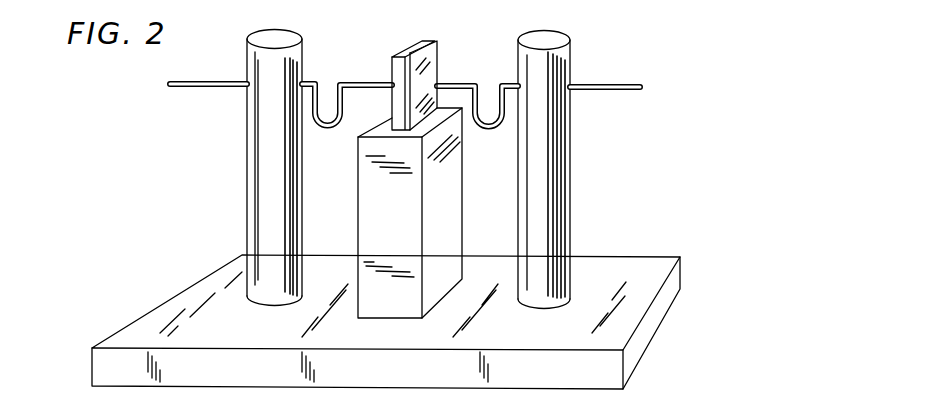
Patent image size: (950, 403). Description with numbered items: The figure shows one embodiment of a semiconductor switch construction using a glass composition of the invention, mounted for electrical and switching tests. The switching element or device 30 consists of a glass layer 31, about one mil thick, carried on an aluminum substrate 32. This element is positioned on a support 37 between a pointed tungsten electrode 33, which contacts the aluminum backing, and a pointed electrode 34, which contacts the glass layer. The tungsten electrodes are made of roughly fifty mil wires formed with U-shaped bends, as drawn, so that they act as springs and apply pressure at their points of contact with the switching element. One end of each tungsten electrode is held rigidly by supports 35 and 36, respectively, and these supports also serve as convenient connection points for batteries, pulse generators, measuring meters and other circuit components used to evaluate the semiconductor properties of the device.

The switching element 30 is at (422, 70).
The layer of glass 31 is at (432, 58).
The aluminum substrate 32 is at (403, 53).
The pointed tungsten electrode 33 is at (369, 83).
The pointed electrode 34 is at (458, 85).
The support 35 is at (265, 158).
The support 36 is at (560, 163).
The support 37 is at (398, 214).